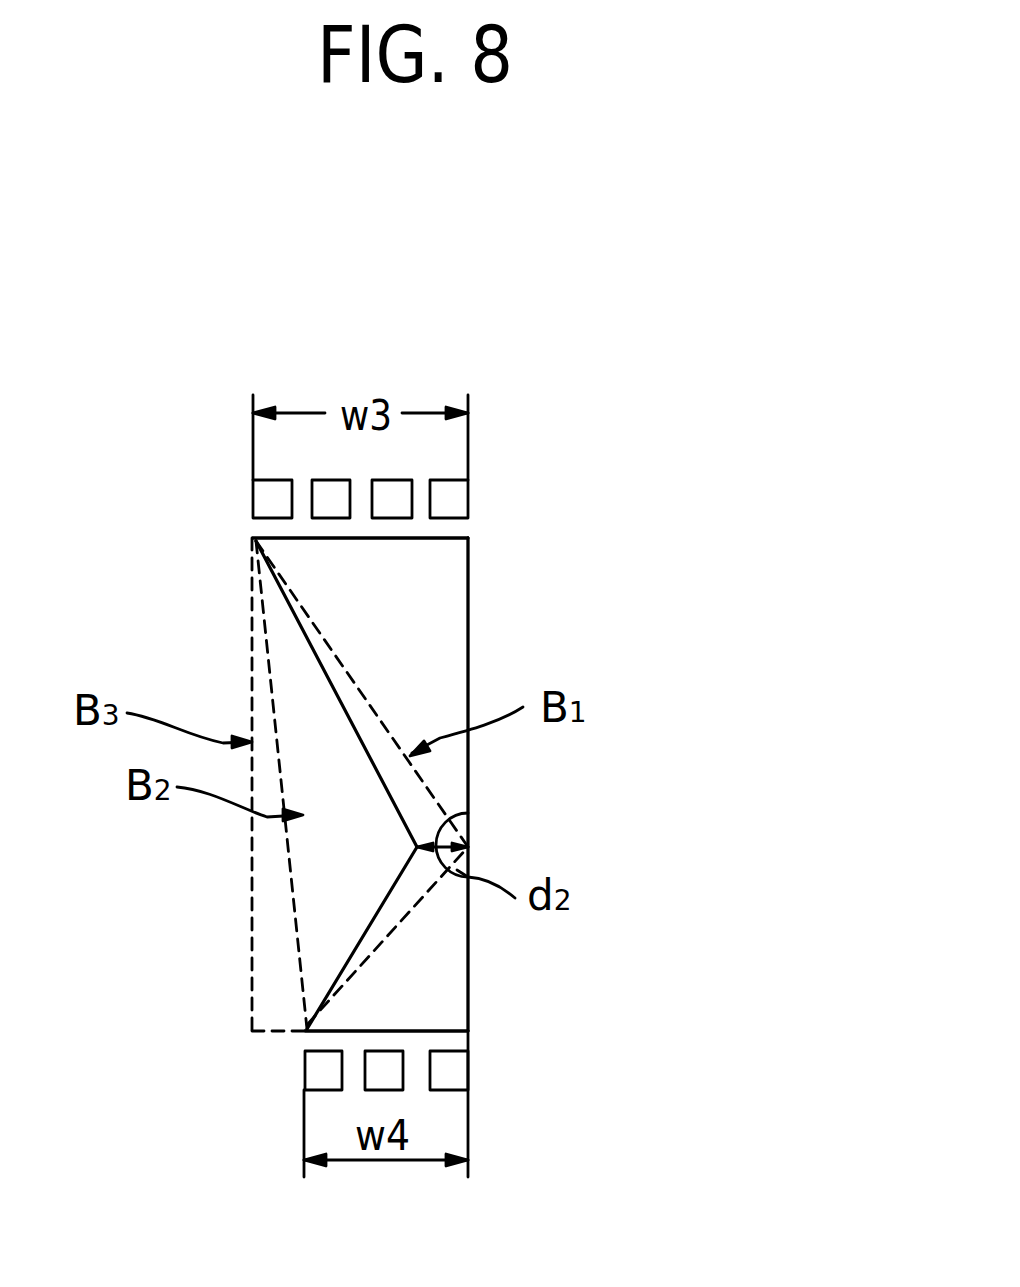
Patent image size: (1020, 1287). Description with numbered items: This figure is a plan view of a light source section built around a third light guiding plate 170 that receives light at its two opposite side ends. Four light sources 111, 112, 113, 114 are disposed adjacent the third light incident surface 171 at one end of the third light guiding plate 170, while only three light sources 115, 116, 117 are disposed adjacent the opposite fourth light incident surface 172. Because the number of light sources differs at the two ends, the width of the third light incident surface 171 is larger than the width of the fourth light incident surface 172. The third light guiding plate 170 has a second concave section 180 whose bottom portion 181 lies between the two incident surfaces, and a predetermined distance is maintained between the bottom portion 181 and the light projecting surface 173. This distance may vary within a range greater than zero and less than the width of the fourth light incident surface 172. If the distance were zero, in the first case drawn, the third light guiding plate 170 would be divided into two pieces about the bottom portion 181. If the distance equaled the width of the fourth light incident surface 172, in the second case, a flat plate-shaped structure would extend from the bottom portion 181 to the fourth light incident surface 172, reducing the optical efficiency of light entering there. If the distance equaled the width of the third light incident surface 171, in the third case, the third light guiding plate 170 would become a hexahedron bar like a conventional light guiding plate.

The light source 111 is at (262, 497).
The light source 112 is at (332, 502).
The light source 113 is at (397, 496).
The light source 114 is at (473, 497).
The light source 115 is at (322, 1077).
The light source 116 is at (377, 1060).
The light source 117 is at (467, 1080).
The third light guiding plate 170 is at (565, 628).
The third light incident surface 171 is at (468, 538).
The fourth light incident surface 172 is at (462, 1034).
The light projecting surface 173 is at (467, 973).
The second concave section 180 is at (350, 880).
The bottom portion 181 is at (468, 813).